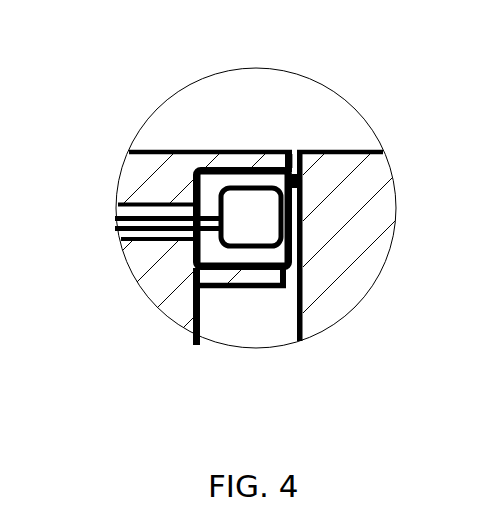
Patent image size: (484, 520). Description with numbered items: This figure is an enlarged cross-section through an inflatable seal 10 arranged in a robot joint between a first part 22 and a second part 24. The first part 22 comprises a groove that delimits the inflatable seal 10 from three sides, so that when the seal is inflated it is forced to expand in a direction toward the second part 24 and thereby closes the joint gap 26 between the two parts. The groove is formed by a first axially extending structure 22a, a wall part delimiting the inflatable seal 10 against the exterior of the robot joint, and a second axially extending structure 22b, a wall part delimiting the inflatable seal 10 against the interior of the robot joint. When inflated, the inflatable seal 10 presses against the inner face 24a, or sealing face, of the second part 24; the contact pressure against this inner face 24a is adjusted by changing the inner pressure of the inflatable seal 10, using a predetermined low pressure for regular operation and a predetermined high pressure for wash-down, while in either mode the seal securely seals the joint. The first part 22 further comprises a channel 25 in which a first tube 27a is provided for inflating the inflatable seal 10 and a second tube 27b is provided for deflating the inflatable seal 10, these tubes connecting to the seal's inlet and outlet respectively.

The inflatable seal 10 is at (270, 257).
The first part 22 is at (150, 190).
The first axially extending structure 22a is at (233, 157).
The second axially extending structure 22b is at (218, 278).
The second part 24 is at (360, 250).
The inner face 24a is at (289, 191).
The channel 25 is at (137, 246).
The joint gap 26 is at (296, 152).
The first tube 27a is at (115, 213).
The second tube 27b is at (117, 232).